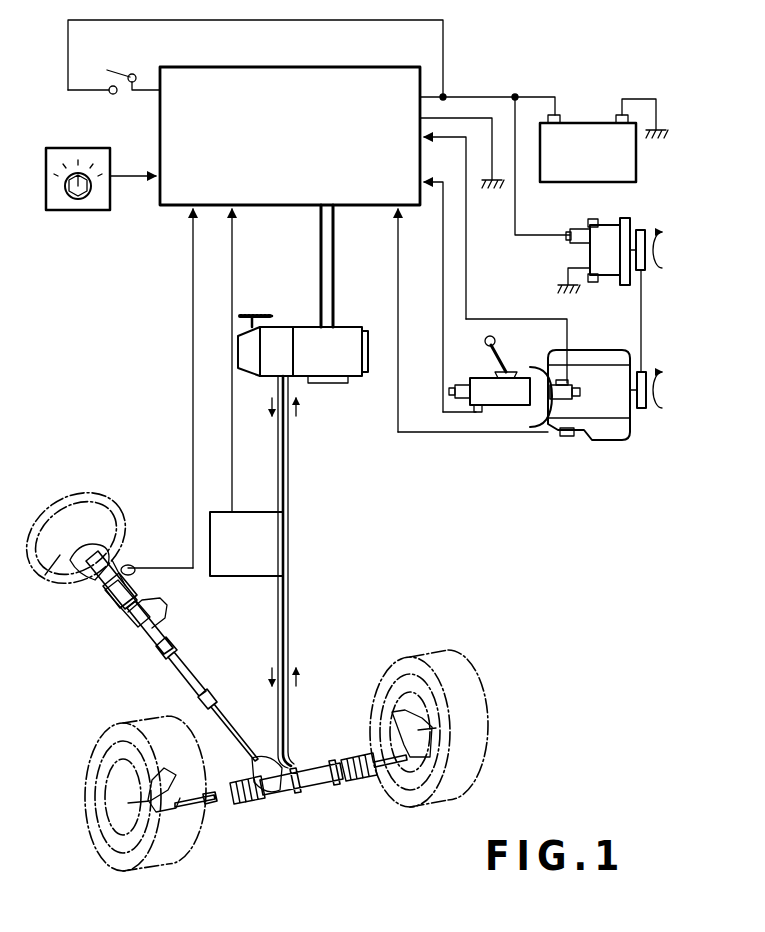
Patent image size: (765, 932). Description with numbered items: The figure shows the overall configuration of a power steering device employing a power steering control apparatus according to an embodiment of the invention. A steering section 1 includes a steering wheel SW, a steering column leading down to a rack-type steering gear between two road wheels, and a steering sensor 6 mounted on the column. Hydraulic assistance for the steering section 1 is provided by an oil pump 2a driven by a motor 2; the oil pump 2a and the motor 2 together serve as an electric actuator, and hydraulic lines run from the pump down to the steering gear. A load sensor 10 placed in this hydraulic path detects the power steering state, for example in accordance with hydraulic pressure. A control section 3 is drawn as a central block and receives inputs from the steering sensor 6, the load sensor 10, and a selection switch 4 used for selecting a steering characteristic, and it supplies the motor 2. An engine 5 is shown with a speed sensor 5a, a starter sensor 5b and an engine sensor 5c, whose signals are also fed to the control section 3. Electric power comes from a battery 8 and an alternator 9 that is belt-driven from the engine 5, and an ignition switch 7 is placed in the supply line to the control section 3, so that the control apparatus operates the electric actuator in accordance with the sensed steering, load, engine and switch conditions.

The steering section 1 is at (298, 813).
The motor 2 is at (330, 387).
The oil pump 2a is at (277, 345).
The control section 3 is at (172, 208).
The selection switch 4 is at (78, 212).
The engine 5 is at (602, 442).
The speed sensor 5a is at (478, 416).
The starter sensor 5b is at (561, 406).
The engine sensor 5c is at (570, 440).
The steering sensor 6 is at (128, 562).
The ignition switch 7 is at (120, 97).
The battery 8 is at (598, 123).
The alternator 9 is at (610, 226).
The load sensor 10 is at (240, 578).
The steering wheel SW is at (98, 497).